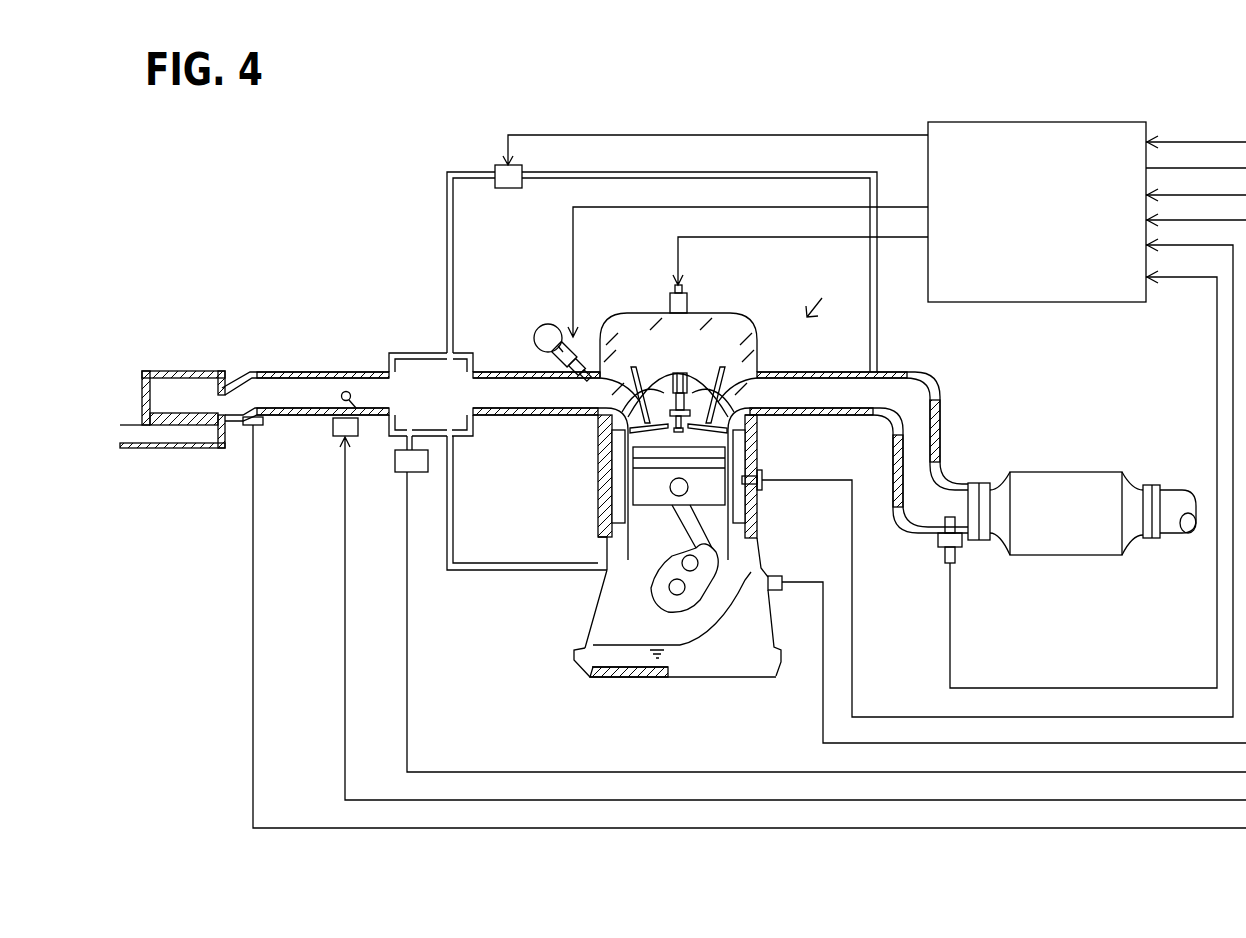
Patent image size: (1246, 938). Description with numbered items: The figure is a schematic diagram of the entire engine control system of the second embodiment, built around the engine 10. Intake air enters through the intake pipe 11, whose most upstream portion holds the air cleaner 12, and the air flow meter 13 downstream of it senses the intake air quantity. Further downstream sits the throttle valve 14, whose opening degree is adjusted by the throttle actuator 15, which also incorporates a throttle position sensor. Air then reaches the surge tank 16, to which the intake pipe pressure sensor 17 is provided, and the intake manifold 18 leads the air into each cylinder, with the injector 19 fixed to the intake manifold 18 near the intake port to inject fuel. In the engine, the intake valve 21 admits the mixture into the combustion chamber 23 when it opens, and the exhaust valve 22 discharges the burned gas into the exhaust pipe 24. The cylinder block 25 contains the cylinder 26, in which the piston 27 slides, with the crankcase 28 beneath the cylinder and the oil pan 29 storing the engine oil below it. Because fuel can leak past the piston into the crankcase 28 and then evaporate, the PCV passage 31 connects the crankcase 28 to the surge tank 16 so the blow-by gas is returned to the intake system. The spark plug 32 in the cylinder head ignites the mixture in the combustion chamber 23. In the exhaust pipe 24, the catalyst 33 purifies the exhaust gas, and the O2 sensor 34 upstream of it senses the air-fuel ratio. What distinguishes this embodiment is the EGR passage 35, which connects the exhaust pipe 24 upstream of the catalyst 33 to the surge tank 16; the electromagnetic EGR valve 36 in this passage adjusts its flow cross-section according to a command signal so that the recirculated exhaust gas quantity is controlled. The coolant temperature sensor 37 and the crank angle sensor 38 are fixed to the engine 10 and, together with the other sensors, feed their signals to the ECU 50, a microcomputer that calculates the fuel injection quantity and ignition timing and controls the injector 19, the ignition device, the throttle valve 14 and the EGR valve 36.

The engine 10 is at (891, 490).
The intake pipe 11 is at (338, 372).
The air cleaner 12 is at (190, 430).
The air flow meter 13 is at (248, 427).
The throttle valve 14 is at (341, 397).
The throttle actuator 15 is at (340, 437).
The surge tank 16 is at (410, 353).
The intake pipe pressure sensor 17 is at (397, 462).
The intake manifold 18 is at (505, 414).
The injector 19 is at (537, 352).
The intake valve 21 is at (614, 430).
The exhaust valve 22 is at (758, 400).
The combustion chamber 23 is at (702, 438).
The exhaust pipe 24 is at (940, 438).
The cylinder block 25 is at (590, 590).
The cylinder 26 is at (638, 515).
The piston 27 is at (622, 480).
The crankcase 28 is at (598, 629).
The oil pan 29 is at (578, 662).
The PCV passage 31 is at (482, 571).
The spark plug 32 is at (696, 374).
The catalyst 33 is at (1092, 472).
The O2 sensor 34 is at (957, 562).
The EGR passage 35 is at (466, 172).
The EGR valve 36 is at (508, 190).
The coolant temperature sensor 37 is at (763, 485).
The crank angle sensor 38 is at (777, 578).
The ECU 50 is at (1088, 122).